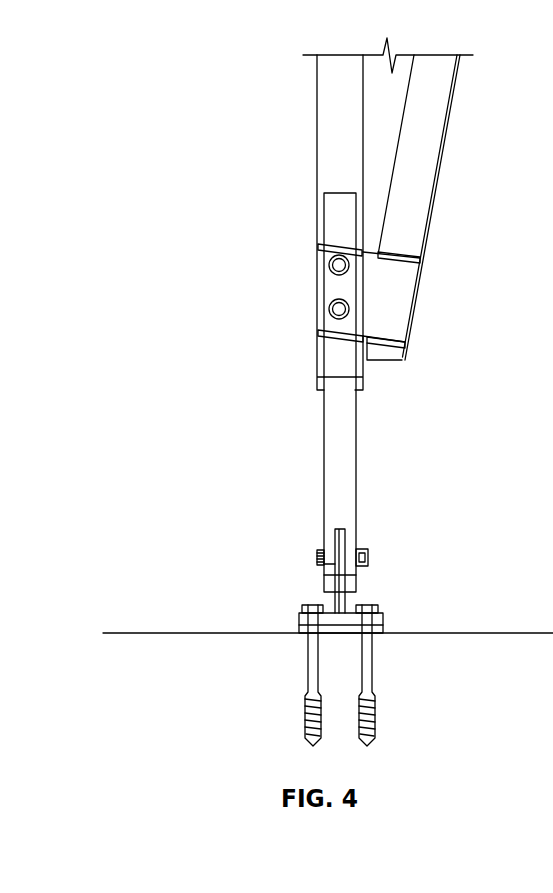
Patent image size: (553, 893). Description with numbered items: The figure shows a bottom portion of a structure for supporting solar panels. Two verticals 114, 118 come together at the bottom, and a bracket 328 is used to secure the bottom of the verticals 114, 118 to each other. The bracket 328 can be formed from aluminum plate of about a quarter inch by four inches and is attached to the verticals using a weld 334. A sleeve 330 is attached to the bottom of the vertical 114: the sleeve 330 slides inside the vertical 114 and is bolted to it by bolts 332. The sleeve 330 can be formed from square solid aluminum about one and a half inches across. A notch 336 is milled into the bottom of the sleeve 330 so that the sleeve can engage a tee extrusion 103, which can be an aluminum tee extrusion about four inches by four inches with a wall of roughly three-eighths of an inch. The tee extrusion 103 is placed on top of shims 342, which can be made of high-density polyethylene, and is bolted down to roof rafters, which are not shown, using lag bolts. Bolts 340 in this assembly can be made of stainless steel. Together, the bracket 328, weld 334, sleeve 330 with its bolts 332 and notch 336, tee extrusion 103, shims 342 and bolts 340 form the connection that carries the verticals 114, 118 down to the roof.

The vertical 114 is at (317, 104).
The vertical 118 is at (448, 122).
The weld 334 is at (349, 250).
The bolts 332 is at (330, 262).
The bracket 328 is at (395, 287).
The sleeve 330 is at (325, 410).
The notch 336 is at (335, 530).
The tee extrusion 103 is at (318, 557).
The bolts 340 is at (313, 605).
The shims 342 is at (297, 630).